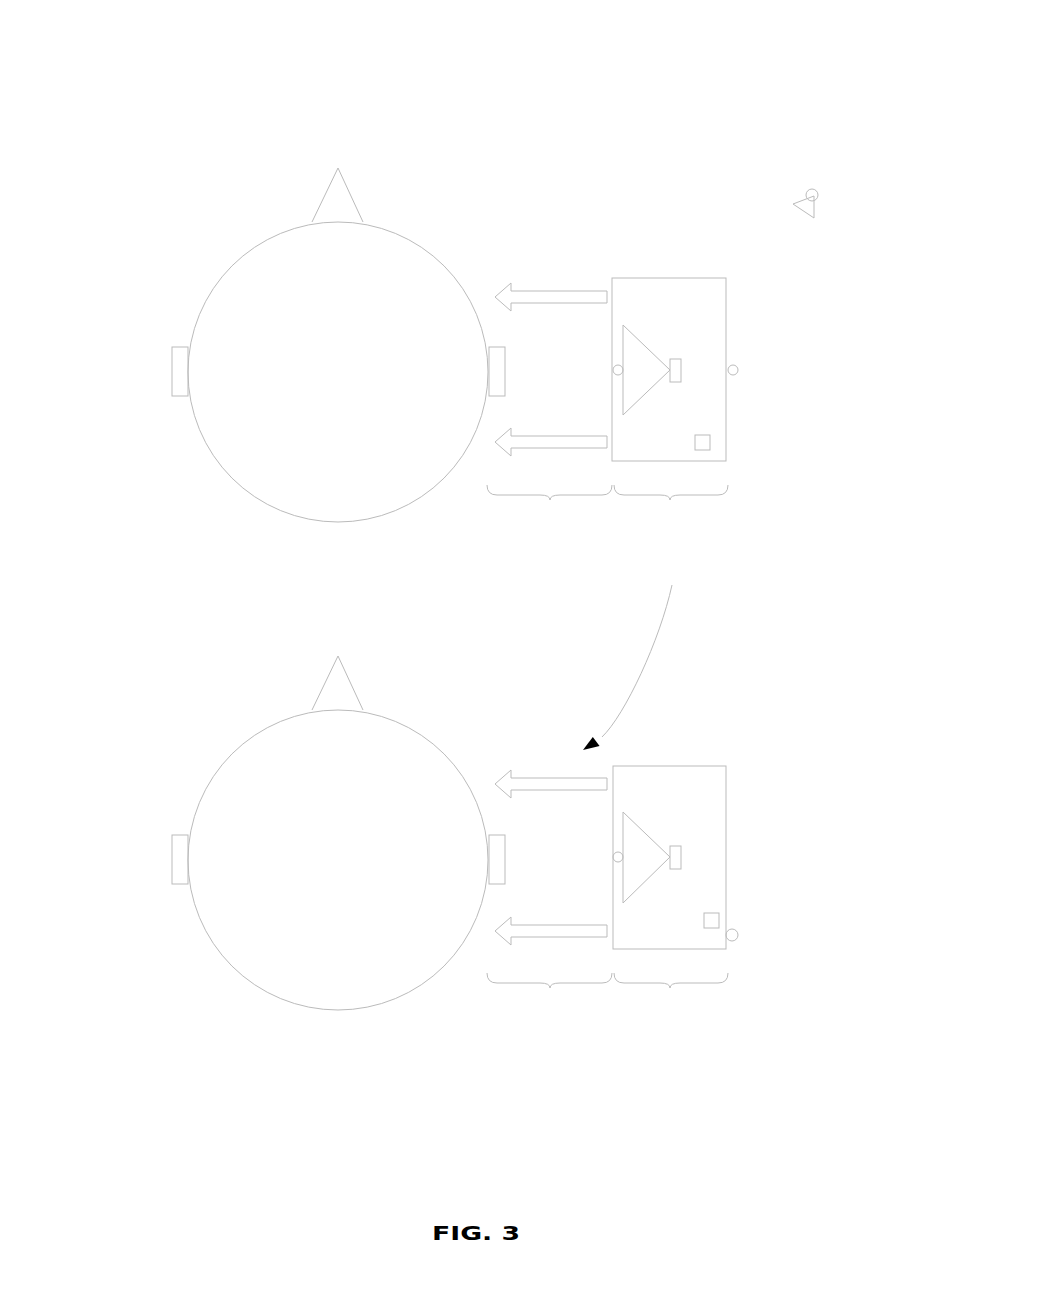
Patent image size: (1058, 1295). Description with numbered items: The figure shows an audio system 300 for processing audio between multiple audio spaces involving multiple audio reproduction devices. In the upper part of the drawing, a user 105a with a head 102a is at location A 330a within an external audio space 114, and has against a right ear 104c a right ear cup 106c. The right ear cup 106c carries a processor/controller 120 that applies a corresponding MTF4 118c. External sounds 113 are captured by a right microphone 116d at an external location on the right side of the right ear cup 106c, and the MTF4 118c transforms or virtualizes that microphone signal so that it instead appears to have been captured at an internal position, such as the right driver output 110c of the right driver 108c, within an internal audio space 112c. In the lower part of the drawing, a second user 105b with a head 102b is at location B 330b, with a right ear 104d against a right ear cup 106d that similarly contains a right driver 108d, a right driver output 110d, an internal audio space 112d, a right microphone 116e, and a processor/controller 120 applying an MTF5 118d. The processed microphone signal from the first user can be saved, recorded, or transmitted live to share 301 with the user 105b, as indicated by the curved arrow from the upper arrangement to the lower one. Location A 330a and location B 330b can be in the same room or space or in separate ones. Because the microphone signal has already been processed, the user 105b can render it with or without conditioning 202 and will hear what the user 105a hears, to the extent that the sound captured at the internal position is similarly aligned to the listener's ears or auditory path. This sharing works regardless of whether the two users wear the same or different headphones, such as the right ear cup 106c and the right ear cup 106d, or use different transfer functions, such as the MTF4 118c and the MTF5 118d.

The audio system 300 is at (849, 71).
The external audio space 114 is at (150, 177).
The head of first user 102a is at (413, 238).
The head of second user 102b is at (413, 726).
The user 105a is at (360, 508).
The user 105b is at (360, 998).
The location A 330a is at (192, 565).
The location B 330b is at (192, 1052).
The right ear 104c is at (529, 340).
The right ear of second user 104d is at (529, 828).
The right ear cup 106c is at (702, 278).
The right ear cup 106d is at (703, 766).
The right driver 108c is at (668, 382).
The right speaker driver 108d is at (668, 869).
The right driver output 110c is at (616, 365).
The right inner microphone 110d is at (616, 852).
The internal audio space 112c is at (712, 320).
The ear cup audio space 112d is at (712, 808).
The external sounds 113 is at (813, 189).
The right microphone 116d is at (734, 365).
The right external microphone 116e is at (737, 939).
The processor/controller 120 is at (752, 925).
The conditioning 202 is at (552, 773).
The MTF4 118c is at (671, 530).
The MTF5 118d is at (671, 1018).
The share 301 is at (648, 657).